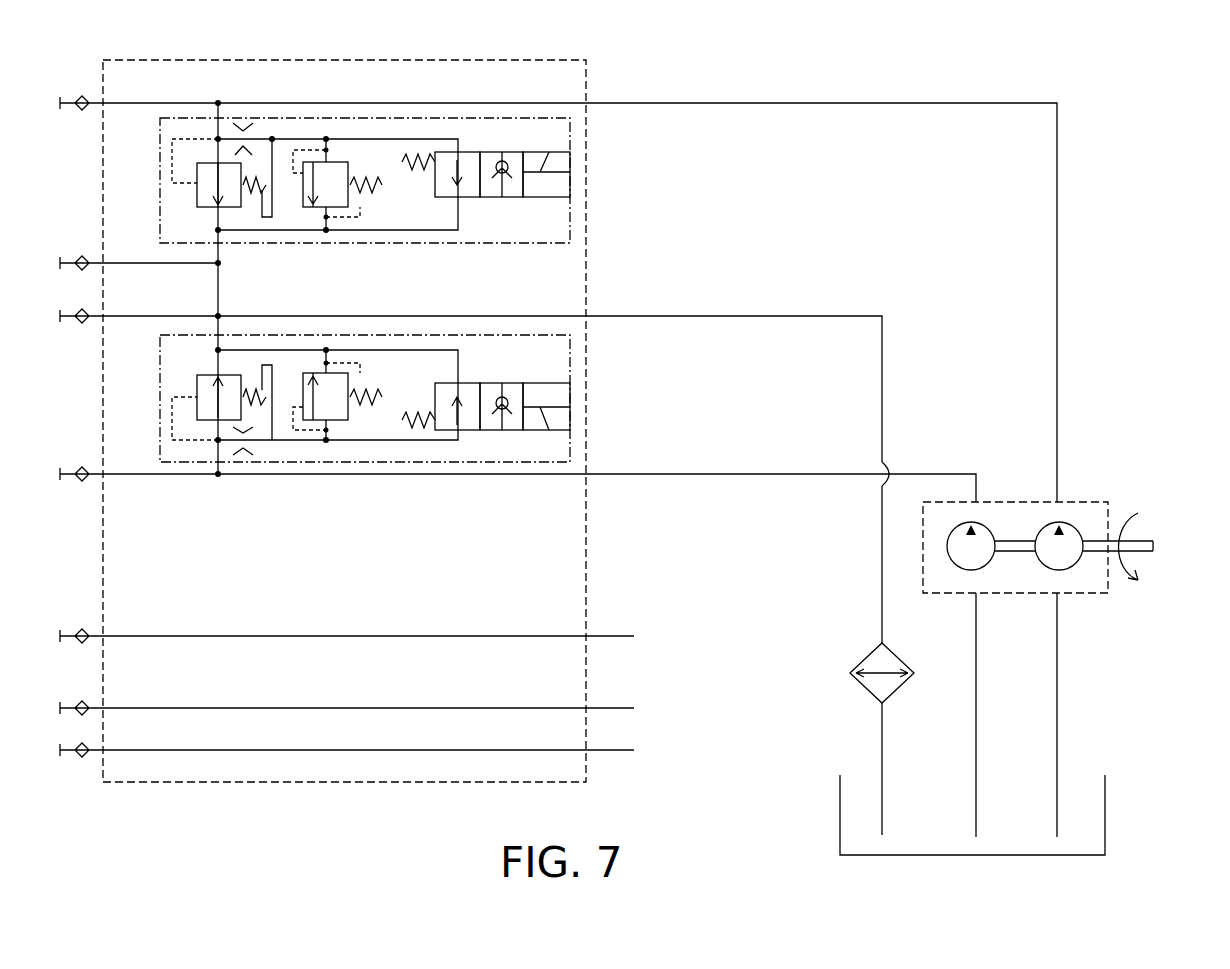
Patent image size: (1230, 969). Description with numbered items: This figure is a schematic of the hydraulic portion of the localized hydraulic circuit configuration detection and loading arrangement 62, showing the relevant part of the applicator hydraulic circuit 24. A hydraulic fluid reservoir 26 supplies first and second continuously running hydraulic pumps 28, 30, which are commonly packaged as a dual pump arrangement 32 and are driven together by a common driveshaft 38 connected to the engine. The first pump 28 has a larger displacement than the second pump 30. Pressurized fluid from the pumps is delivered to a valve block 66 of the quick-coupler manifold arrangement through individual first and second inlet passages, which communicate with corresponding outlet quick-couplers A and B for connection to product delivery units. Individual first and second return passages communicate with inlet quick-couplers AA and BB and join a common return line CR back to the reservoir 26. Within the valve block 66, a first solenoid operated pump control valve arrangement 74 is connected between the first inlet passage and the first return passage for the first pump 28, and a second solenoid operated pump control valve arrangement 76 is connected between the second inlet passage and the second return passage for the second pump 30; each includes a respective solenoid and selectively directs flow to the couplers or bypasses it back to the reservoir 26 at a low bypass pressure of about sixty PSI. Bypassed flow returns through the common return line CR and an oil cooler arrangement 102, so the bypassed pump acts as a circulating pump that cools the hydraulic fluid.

The localized hydraulic circuit configuration detection and loading arrangement 62 is at (882, 42).
The hydraulic circuit 24 is at (981, 77).
The valve block 66 is at (102, 572).
The first solenoid operated pump control valve arrangement 74 is at (568, 240).
The second solenoid operated pump control valve arrangement 76 is at (568, 458).
The oil cooler arrangement 102 is at (866, 660).
The hydraulic fluid reservoir 26 is at (1105, 815).
The dual pump arrangement 32 is at (1088, 593).
The second pump 30 is at (990, 527).
The first pump 28 is at (1078, 527).
The common driveshaft 38 is at (1142, 542).